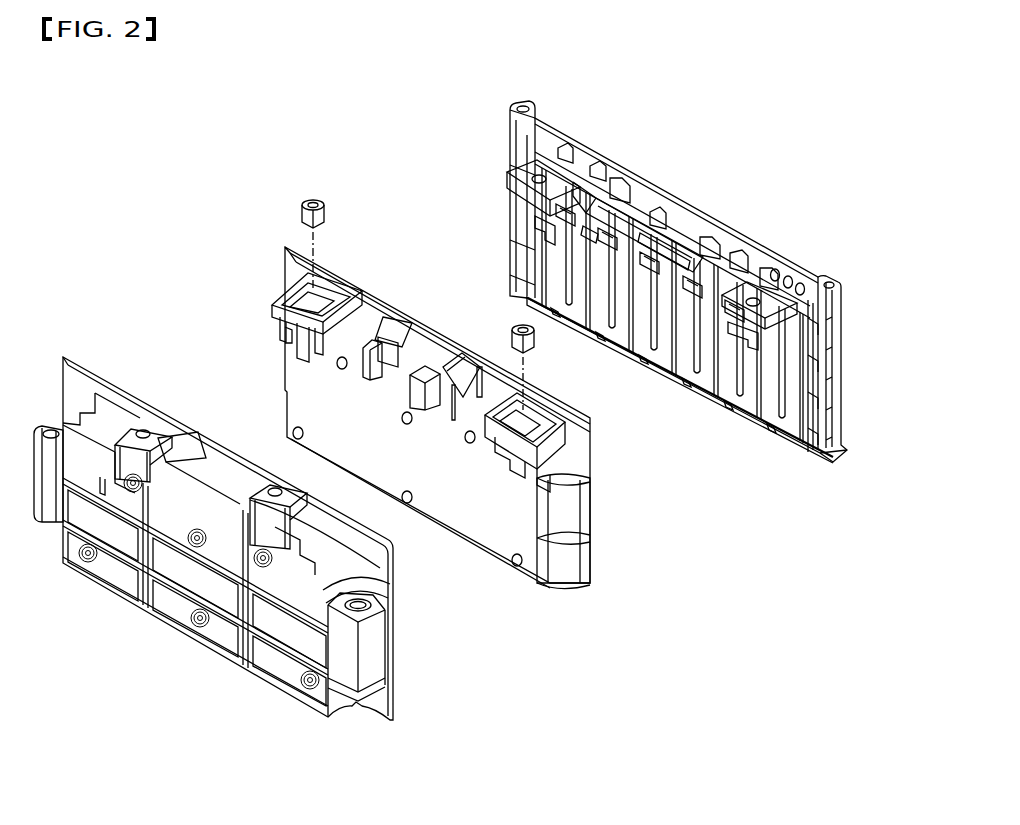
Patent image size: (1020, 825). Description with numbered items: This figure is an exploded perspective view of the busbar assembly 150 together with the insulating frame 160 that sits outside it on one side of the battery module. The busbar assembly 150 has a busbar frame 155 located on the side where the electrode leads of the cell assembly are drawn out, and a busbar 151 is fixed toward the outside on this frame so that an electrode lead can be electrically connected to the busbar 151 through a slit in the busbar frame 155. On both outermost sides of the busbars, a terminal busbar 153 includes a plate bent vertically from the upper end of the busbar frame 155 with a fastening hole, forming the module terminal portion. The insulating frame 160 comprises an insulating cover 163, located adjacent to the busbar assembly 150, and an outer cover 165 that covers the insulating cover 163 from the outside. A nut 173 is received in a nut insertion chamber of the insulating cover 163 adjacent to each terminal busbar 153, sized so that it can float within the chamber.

The busbar assembly 150 is at (733, 231).
The busbar 151 is at (567, 318).
The terminal busbar 153 is at (522, 183).
The busbar frame 155 is at (851, 378).
The insulating frame 160 is at (518, 622).
The insulating cover 163 is at (502, 560).
The outer cover 165 is at (396, 652).
The nut 173 is at (310, 198).